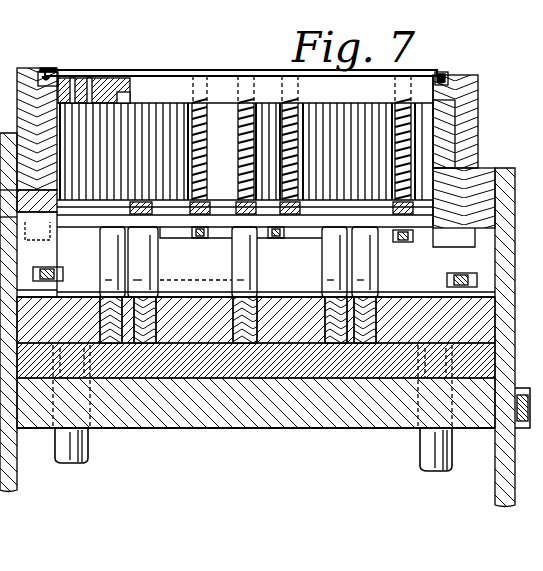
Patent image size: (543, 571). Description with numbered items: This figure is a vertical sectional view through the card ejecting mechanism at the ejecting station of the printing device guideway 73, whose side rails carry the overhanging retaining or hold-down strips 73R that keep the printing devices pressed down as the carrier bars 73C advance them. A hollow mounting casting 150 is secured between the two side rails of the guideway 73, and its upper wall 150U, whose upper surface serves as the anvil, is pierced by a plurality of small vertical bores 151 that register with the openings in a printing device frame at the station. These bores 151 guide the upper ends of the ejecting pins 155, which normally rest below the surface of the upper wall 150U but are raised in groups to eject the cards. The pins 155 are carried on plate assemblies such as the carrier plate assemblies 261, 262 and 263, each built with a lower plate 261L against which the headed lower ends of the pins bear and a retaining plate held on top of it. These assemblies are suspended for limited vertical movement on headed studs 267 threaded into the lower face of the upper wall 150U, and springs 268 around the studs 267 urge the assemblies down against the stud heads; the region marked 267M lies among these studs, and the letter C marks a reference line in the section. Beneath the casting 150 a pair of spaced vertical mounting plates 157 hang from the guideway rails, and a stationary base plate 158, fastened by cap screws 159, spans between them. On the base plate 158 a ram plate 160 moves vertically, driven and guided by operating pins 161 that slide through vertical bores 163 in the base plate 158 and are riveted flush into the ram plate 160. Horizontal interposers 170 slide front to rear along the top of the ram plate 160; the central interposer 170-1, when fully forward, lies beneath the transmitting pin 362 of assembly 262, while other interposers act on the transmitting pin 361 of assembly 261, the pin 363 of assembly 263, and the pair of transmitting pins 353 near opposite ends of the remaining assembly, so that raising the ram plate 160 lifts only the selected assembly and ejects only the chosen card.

The printing device guideway 73 is at (478, 100).
The retaining or hold-down strips 73R is at (35, 70).
The carrier bars 73C is at (442, 125).
The mounting casting 150 is at (424, 88).
The upper wall 150U is at (122, 84).
The vertical bores 151 is at (122, 78).
The ejecting pins 155 is at (102, 122).
The vertical mounting plates 157 is at (15, 468).
The stationary base plate 158 is at (207, 410).
The cap screws 159 is at (512, 428).
The ram plate 160 is at (298, 368).
The operating and guiding pins 161 is at (83, 445).
The vertical bores 163 is at (52, 413).
The interposers 170 is at (388, 303).
The interposer 170-1 is at (260, 305).
The carrier plate assembly 261 is at (245, 153).
The lower plate 261L is at (63, 222).
The carrier plate assembly 262 is at (262, 200).
The carrier plate assembly 263 is at (312, 223).
The headed studs 267 is at (200, 178).
The middle chamber 267M is at (196, 253).
The springs 268 is at (212, 103).
The transmitting pins 353 is at (102, 272).
The transmitting pin 361 is at (158, 286).
The transmitting pin 362 is at (233, 292).
The transmitting pin 363 is at (327, 272).
The center line C is at (43, 107).